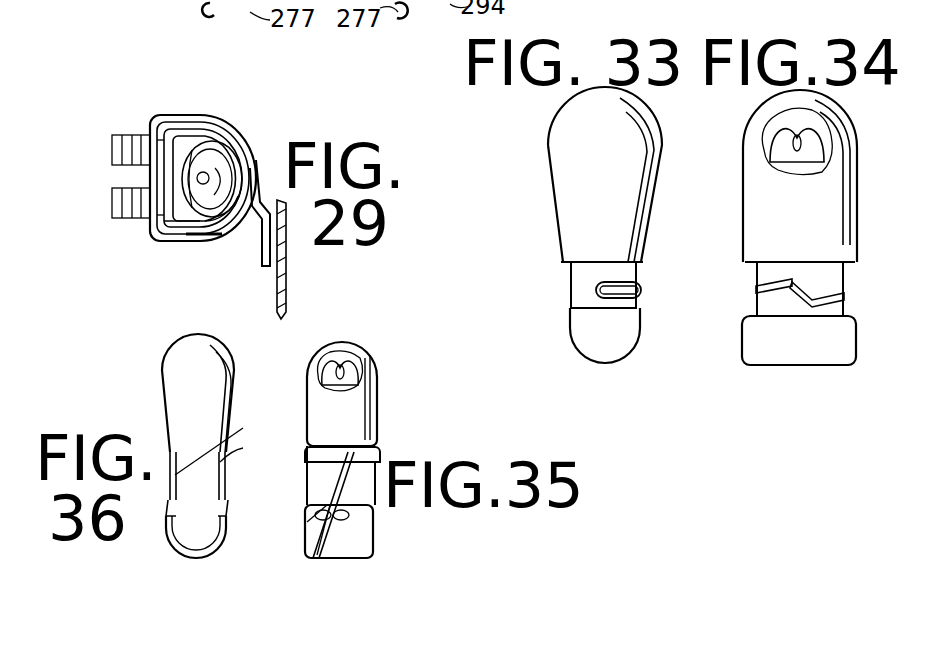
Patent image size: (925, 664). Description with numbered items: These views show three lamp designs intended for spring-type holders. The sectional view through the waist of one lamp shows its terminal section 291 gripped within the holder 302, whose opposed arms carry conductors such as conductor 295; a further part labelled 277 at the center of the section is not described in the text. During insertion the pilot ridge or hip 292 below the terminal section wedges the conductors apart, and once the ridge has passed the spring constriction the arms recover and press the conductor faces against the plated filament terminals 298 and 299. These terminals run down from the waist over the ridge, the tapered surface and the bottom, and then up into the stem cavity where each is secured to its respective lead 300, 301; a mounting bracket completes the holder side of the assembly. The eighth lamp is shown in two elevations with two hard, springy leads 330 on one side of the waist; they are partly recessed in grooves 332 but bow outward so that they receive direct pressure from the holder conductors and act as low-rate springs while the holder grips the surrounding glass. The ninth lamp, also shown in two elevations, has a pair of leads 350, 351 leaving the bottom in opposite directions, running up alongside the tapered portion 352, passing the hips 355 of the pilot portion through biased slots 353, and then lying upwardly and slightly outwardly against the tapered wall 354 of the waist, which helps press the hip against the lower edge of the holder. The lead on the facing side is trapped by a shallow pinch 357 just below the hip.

In FIG. 29, the pivot pin 277 is at (197, 178).
In FIG. 29, the terminal section 291 is at (188, 135).
In FIG. 29, the pilot ridge portion 292 is at (228, 224).
In FIG. 29, the conductor 295 is at (112, 192).
In FIG. 29, the filament terminal 298 is at (183, 114).
In FIG. 29, the filament terminal 299 is at (256, 172).
In FIG. 29, the lead 300 is at (182, 232).
In FIG. 29, the lead 301 is at (204, 238).
In FIG. 29, the holder 302 is at (222, 128).
In FIG. 34, the lead 330 is at (756, 291).
In FIG. 34, the groove 332 is at (758, 283).
In FIG. 35, the lead 350 is at (346, 478).
In FIG. 36, the lead 350 is at (256, 449).
In FIG. 36, the lead 351 is at (176, 470).
In FIG. 35, the tapered portion 352 is at (308, 540).
In FIG. 36, the tapered portion 352 is at (200, 535).
In FIG. 35, the biased slot 353 is at (328, 525).
In FIG. 36, the biased slot 353 is at (222, 512).
In FIG. 35, the tapered wall 354 is at (307, 462).
In FIG. 36, the tapered wall 354 is at (231, 456).
In FIG. 35, the hip 355 is at (305, 508).
In FIG. 36, the hip 355 is at (226, 504).
In FIG. 35, the shallow pinch 357 is at (345, 520).